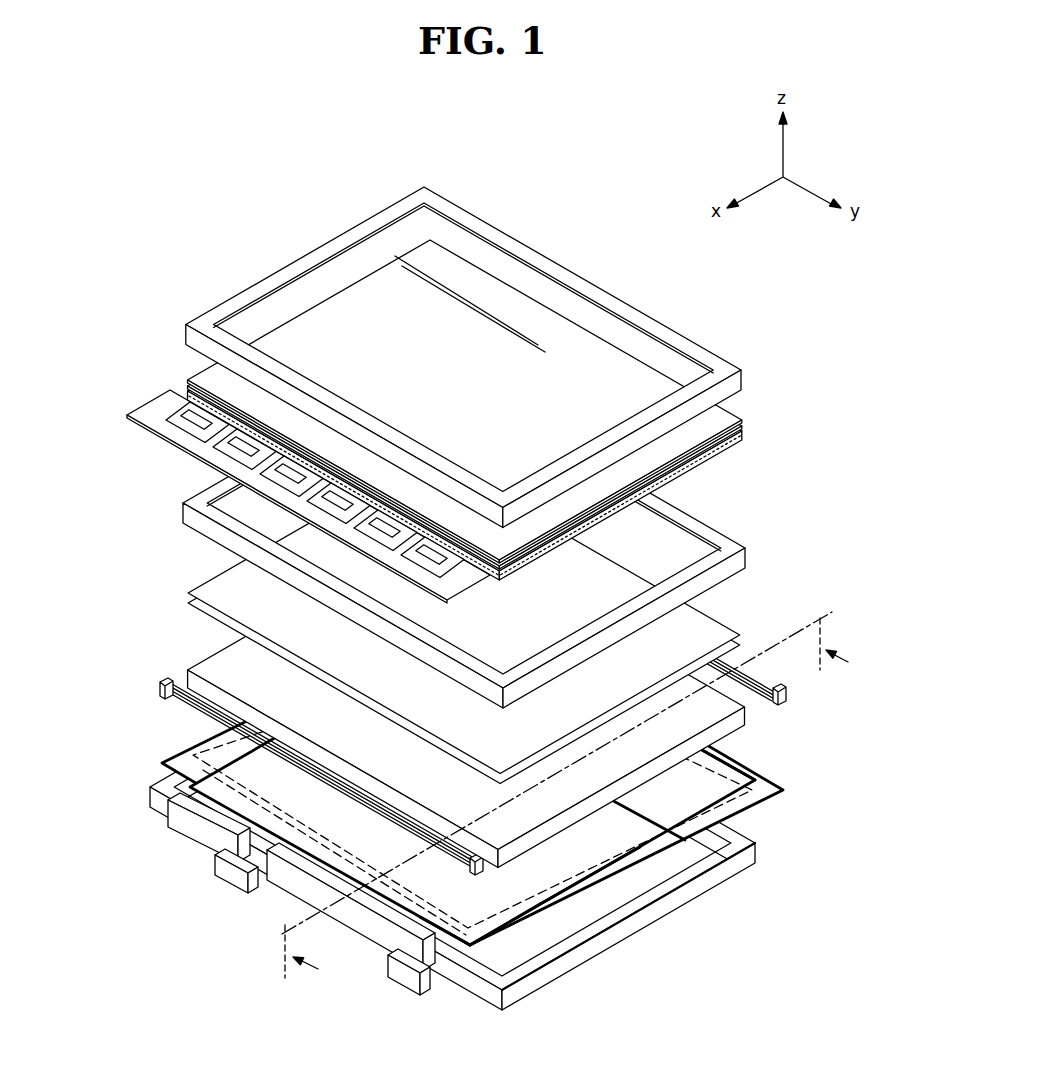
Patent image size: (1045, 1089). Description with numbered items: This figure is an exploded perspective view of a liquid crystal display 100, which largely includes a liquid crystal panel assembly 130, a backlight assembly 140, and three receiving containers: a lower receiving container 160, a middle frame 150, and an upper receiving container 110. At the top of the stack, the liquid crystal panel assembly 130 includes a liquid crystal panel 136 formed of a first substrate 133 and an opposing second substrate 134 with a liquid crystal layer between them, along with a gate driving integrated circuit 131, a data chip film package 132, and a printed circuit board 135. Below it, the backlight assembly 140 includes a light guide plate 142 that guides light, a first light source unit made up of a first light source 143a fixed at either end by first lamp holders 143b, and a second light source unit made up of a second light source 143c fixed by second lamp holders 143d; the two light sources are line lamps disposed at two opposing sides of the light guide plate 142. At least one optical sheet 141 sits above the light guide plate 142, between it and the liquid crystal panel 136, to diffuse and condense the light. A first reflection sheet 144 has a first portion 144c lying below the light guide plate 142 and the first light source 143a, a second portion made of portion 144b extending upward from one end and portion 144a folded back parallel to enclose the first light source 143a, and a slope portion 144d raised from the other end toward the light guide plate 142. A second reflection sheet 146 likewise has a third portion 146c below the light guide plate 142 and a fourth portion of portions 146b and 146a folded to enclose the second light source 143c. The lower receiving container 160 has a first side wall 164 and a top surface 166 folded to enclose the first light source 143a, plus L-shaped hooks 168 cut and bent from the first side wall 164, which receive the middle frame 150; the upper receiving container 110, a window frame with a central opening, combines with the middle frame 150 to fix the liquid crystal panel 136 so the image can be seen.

The liquid crystal display 100 is at (590, 202).
The upper receiving container 110 is at (743, 368).
The liquid crystal panel assembly 130 is at (452, 421).
The gate driving integrated circuit 131 is at (712, 468).
The data chip film package 132 is at (186, 384).
The first substrate 133 is at (735, 428).
The second substrate 134 is at (735, 410).
The printed circuit board 135 is at (135, 414).
The liquid crystal panel 136 is at (523, 404).
The backlight assembly 140 is at (493, 754).
The optical sheet 141 is at (178, 588).
The light guide plate 142 is at (220, 668).
The first light source 143a is at (184, 708).
The first lamp holders 143b is at (158, 686).
The second light source 143c is at (786, 688).
The second lamp holders 143d is at (786, 701).
The first reflection sheet 144 is at (595, 888).
The portion of the second portion 144a is at (485, 937).
The portion of the second portion 144b is at (515, 930).
The first portion 144c is at (588, 860).
The slope portion 144d is at (730, 832).
The second reflection sheet 146 is at (533, 821).
The portion of the fourth portion 146a is at (785, 786).
The portion of the fourth portion 146b is at (772, 798).
The third portion 146c is at (770, 806).
The middle frame 150 is at (746, 550).
The lower receiving container 160 is at (498, 847).
The first side wall 164 is at (368, 928).
The top surface 166 is at (292, 862).
The hooks 168 is at (430, 996).